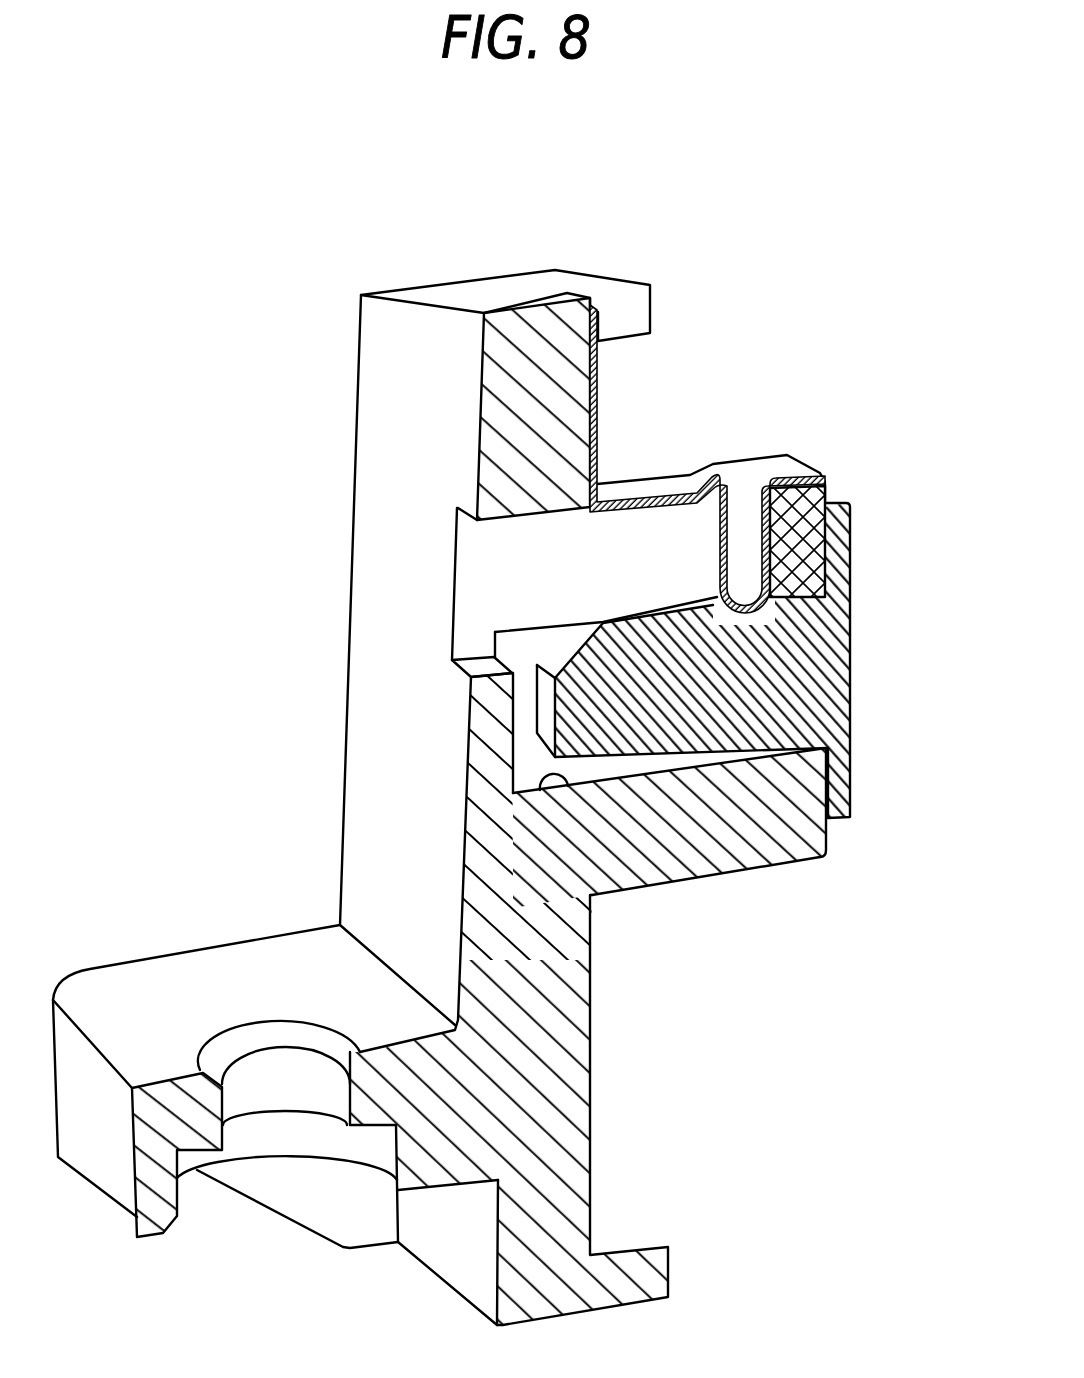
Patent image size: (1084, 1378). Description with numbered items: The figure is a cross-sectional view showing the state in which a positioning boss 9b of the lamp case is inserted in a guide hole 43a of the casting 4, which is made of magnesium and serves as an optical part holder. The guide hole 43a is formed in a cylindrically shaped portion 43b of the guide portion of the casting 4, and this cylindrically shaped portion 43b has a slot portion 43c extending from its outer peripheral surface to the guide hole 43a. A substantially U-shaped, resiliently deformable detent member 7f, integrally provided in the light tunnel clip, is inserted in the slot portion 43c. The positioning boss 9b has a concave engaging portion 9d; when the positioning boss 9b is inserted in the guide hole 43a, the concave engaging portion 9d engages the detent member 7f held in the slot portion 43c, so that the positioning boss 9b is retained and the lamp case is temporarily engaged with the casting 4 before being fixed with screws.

The casting 4 is at (468, 293).
The detent member 7f is at (744, 600).
The positioning boss 9b is at (835, 635).
The concave engaging portion 9d is at (825, 482).
The guide hole 43a is at (640, 860).
The cylindrically shaped portion 43b is at (800, 850).
The slot portion 43c is at (733, 478).